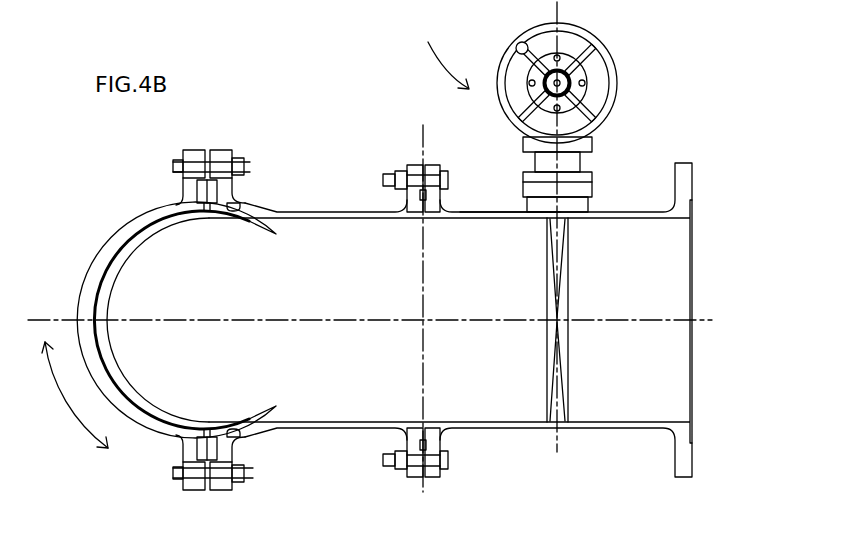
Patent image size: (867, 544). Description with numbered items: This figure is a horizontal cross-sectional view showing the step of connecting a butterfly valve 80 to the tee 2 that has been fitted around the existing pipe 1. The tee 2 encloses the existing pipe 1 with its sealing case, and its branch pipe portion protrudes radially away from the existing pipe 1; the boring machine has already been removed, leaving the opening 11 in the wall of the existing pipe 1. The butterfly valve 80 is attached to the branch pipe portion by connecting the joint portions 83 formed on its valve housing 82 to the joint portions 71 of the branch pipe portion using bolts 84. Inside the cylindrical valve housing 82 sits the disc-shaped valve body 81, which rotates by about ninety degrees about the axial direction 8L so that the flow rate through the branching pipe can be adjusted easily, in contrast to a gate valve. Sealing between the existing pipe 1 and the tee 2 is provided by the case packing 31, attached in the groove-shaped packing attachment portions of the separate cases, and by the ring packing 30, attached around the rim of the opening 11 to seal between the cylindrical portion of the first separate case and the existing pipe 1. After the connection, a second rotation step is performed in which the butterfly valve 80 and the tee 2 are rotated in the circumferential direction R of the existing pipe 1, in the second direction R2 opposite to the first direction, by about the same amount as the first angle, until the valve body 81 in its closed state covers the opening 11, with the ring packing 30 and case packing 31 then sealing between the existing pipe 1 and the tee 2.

The existing pipe 1 is at (123, 379).
The opening 11 is at (253, 362).
The tee 2 is at (303, 428).
The ring packing 30 is at (242, 209).
The case packing 31 is at (198, 192).
The joint portions 71 is at (412, 167).
The joint portions 83 is at (430, 167).
The bolts 84 is at (385, 180).
The valve housing 82 is at (471, 213).
The valve body 81 is at (563, 303).
The butterfly valve 80 is at (642, 157).
The axial direction 8L is at (558, 443).
The circumferential direction R is at (75, 395).
The second direction R2 is at (452, 61).